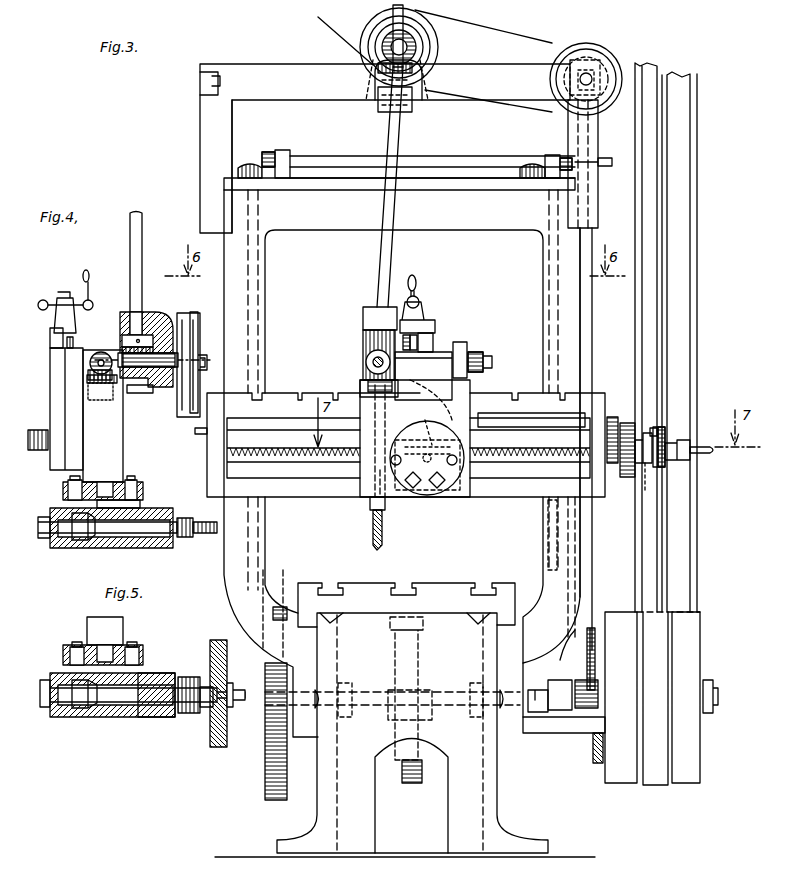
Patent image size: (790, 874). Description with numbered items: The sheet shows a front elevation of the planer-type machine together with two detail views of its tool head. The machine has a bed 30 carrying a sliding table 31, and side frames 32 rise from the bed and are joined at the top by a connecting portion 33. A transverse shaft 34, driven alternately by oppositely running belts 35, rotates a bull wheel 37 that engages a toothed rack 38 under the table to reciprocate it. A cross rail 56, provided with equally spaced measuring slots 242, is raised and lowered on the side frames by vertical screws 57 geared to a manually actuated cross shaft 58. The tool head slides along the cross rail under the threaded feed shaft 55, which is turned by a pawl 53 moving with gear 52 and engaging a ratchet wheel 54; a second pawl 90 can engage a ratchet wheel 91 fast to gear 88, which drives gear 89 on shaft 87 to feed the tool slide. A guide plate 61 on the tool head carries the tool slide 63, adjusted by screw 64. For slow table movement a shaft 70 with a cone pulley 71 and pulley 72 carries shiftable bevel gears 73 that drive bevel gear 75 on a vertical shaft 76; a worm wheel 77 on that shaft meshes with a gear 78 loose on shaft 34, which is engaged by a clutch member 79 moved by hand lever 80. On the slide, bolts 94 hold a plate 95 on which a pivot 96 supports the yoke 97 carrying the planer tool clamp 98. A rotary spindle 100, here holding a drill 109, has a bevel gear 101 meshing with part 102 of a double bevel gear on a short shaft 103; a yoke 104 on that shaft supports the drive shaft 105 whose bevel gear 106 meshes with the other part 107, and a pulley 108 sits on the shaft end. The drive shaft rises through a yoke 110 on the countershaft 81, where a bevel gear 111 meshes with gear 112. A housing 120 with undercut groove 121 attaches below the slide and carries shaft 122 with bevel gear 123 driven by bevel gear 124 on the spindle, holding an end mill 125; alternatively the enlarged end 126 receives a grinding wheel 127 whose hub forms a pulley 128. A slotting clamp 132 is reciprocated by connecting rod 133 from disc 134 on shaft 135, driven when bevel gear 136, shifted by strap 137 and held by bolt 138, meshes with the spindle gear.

In FIG. 3, the bed 30 is at (500, 785).
In FIG. 3, the table 31 is at (360, 590).
In FIG. 3, the side frames 32 is at (232, 298).
In FIG. 3, the connecting portion 33 is at (338, 230).
In FIG. 3, the transverse shaft 34 is at (540, 712).
In FIG. 3, the belts 35 is at (676, 78).
In FIG. 3, the bull wheel 37 is at (400, 647).
In FIG. 3, the toothed rack 38 is at (420, 622).
In FIG. 3, the gear 52 is at (652, 430).
In FIG. 3, the pawl 53 is at (680, 440).
In FIG. 3, the ratchet wheel 54 is at (680, 460).
In FIG. 3, the threaded feed shaft 55 is at (522, 428).
In FIG. 3, the cross rail 56 is at (305, 405).
In FIG. 3, the vertical screws 57 is at (268, 330).
In FIG. 3, the cross shaft 58 is at (463, 162).
In FIG. 3, the guide plate 61 is at (445, 350).
In FIG. 4, the guide plate 61 is at (50, 338).
In FIG. 3, the tool slide 63 is at (362, 392).
In FIG. 4, the tool slide 63 is at (62, 362).
In FIG. 3, the screw 64 is at (423, 327).
In FIG. 4, the screw 64 is at (62, 290).
In FIG. 3, the shaft 70 is at (592, 75).
In FIG. 3, the cone pulley 71 is at (578, 47).
In FIG. 3, the pulley 72 is at (606, 117).
In FIG. 3, the bevel gears 73 is at (590, 50).
In FIG. 3, the bevel gear 75 is at (548, 112).
In FIG. 3, the vertical shaft 76 is at (594, 540).
In FIG. 3, the worm wheel 77 is at (588, 706).
In FIG. 3, the gear 78 is at (594, 763).
In FIG. 3, the clutch member 79 is at (560, 682).
In FIG. 3, the hand lever 80 is at (572, 640).
In FIG. 3, the countershaft 81 is at (422, 47).
In FIG. 3, the shaft 87 is at (508, 418).
In FIG. 3, the gear 88 is at (612, 465).
In FIG. 3, the gear 89 is at (626, 418).
In FIG. 3, the pawl 90 is at (662, 428).
In FIG. 3, the ratchet wheel 91 is at (648, 463).
In FIG. 3, the bolts 94 is at (396, 470).
In FIG. 3, the plate 95 is at (458, 478).
In FIG. 3, the pivot 96 is at (440, 420).
In FIG. 3, the yoke 97 is at (418, 490).
In FIG. 3, the planer tool clamp 98 is at (418, 488).
In FIG. 3, the rotary spindle 100 is at (368, 503).
In FIG. 4, the rotary spindle 100 is at (110, 487).
In FIG. 5, the rotary spindle 100 is at (110, 650).
In FIG. 3, the bevel gear 101 is at (366, 376).
In FIG. 4, the bevel gear 101 is at (85, 392).
In FIG. 4, the double bevel gear part 102 is at (108, 352).
In FIG. 3, the short shaft 103 is at (366, 358).
In FIG. 4, the short shaft 103 is at (158, 380).
In FIG. 3, the yoke 104 is at (366, 315).
In FIG. 4, the yoke 104 is at (160, 318).
In FIG. 3, the drive shaft 105 is at (388, 138).
In FIG. 4, the drive shaft 105 is at (143, 222).
In FIG. 4, the bevel gear 106 is at (126, 312).
In FIG. 3, the double bevel gear part 107 is at (372, 382).
In FIG. 4, the double bevel gear part 107 is at (127, 390).
In FIG. 3, the pulley 108 is at (192, 362).
In FIG. 4, the pulley 108 is at (190, 343).
In FIG. 3, the drill 109 is at (374, 532).
In FIG. 3, the yoke 110 is at (406, 112).
In FIG. 3, the bevel gear 111 is at (373, 65).
In FIG. 3, the bevel gear 112 is at (390, 43).
In FIG. 4, the housing 120 is at (72, 545).
In FIG. 5, the housing 120 is at (150, 676).
In FIG. 4, the circular undercut groove 121 is at (145, 492).
In FIG. 5, the circular undercut groove 121 is at (68, 665).
In FIG. 4, the shaft 122 is at (145, 540).
In FIG. 5, the shaft 122 is at (125, 704).
In FIG. 4, the bevel gear 123 is at (92, 540).
In FIG. 5, the bevel gear 123 is at (92, 710).
In FIG. 4, the bevel gear 124 is at (140, 507).
In FIG. 4, the end mill 125 is at (205, 534).
In FIG. 4, the enlarged shaft end 126 is at (183, 537).
In FIG. 5, the enlarged shaft end 126 is at (196, 712).
In FIG. 5, the grinding wheel 127 is at (220, 745).
In FIG. 5, the pulley 128 is at (188, 676).
In FIG. 3, the clamp 132 is at (474, 498).
In FIG. 3, the connecting rod 133 is at (476, 373).
In FIG. 3, the disc 134 is at (468, 348).
In FIG. 4, the shaft 135 is at (85, 375).
In FIG. 3, the bevel gear 136 is at (372, 345).
In FIG. 4, the bevel gear 136 is at (86, 384).
In FIG. 3, the strap 137 is at (452, 333).
In FIG. 3, the bolt 138 is at (437, 335).
In FIG. 3, the slots 242 is at (563, 390).